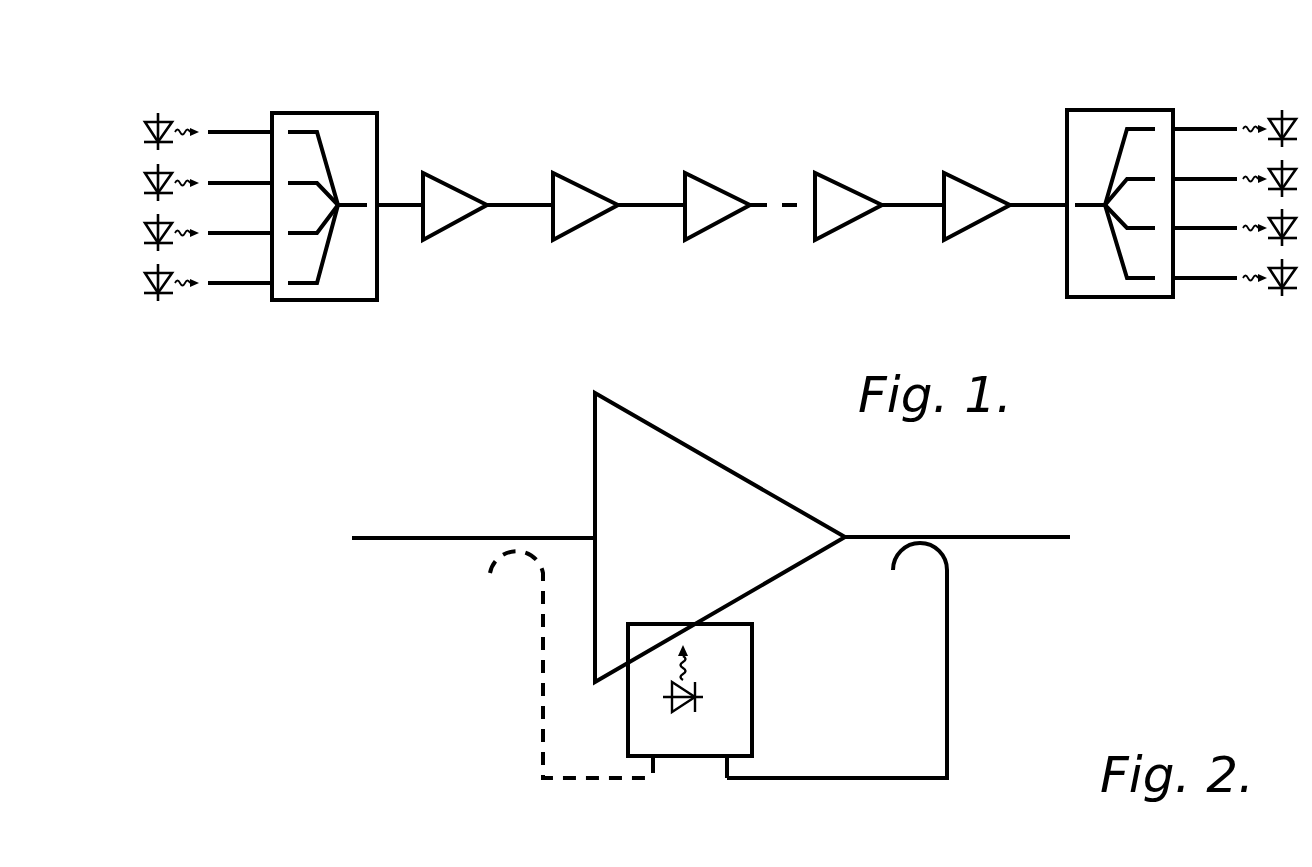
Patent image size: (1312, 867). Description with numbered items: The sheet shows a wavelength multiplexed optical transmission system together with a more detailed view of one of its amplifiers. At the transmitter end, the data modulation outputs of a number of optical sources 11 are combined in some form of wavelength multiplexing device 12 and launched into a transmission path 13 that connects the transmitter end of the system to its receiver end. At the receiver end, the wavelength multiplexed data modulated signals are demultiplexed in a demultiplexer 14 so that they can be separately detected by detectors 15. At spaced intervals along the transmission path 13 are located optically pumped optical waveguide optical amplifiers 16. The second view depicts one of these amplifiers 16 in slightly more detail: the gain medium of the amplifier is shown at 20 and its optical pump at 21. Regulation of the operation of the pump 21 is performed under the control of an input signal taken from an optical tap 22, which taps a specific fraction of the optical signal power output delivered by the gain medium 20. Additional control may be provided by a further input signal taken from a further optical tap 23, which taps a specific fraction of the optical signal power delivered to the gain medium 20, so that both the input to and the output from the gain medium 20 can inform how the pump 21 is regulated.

In FIG. 1, the optical sources 11 is at (163, 176).
In FIG. 1, the wavelength multiplexing device 12 is at (343, 143).
In FIG. 1, the transmission path 13 is at (393, 205).
In FIG. 2, the transmission path 13 is at (420, 538).
In FIG. 1, the demultiplexer 14 is at (1092, 143).
In FIG. 1, the detectors 15 is at (1278, 170).
In FIG. 1, the optically pumped optical waveguide optical amplifiers 16 is at (440, 222).
In FIG. 2, the gain medium 20 is at (647, 518).
In FIG. 2, the optical pump 21 is at (713, 677).
In FIG. 2, the optical tap 22 is at (918, 548).
In FIG. 2, the further optical tap 23 is at (513, 553).